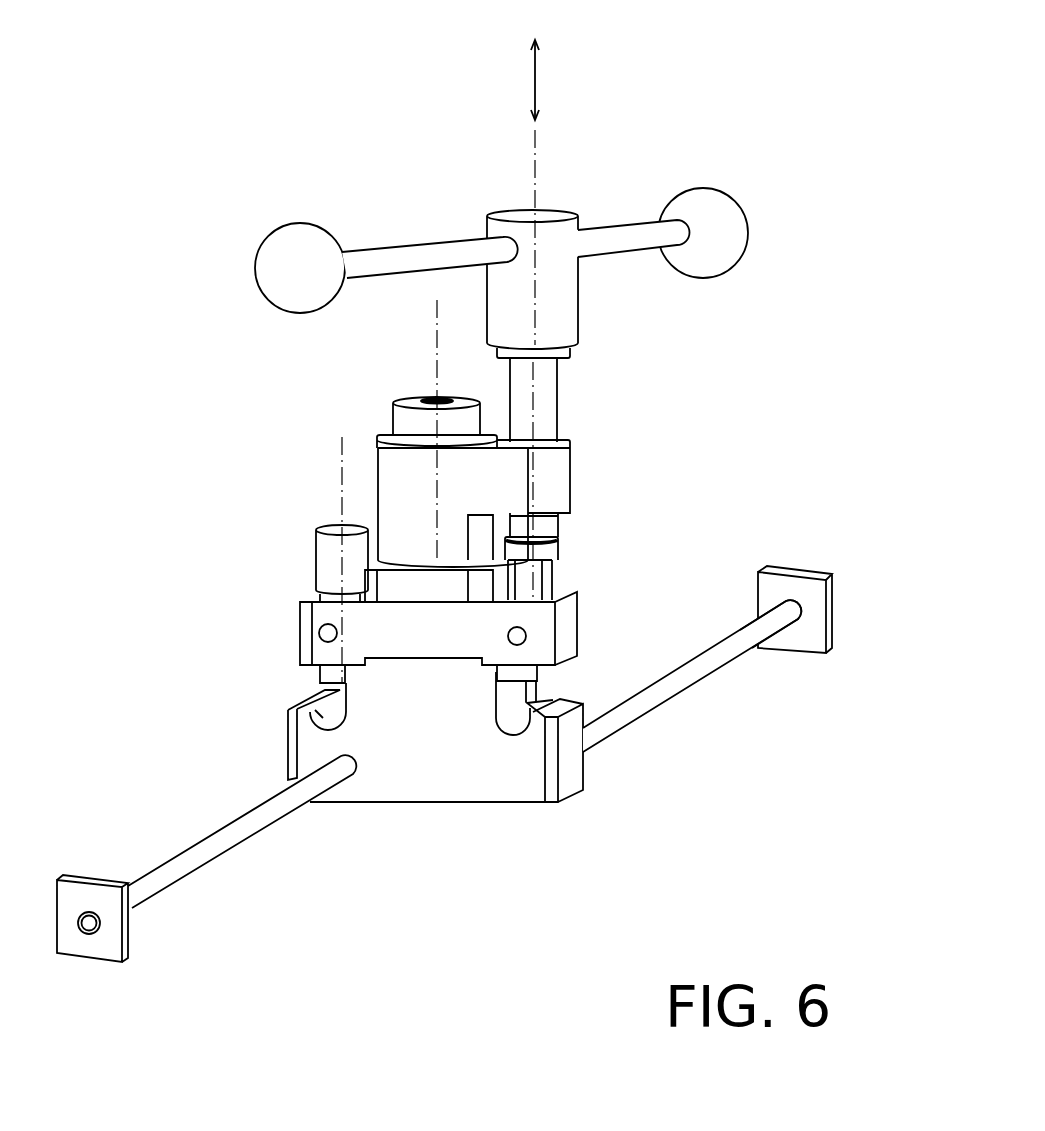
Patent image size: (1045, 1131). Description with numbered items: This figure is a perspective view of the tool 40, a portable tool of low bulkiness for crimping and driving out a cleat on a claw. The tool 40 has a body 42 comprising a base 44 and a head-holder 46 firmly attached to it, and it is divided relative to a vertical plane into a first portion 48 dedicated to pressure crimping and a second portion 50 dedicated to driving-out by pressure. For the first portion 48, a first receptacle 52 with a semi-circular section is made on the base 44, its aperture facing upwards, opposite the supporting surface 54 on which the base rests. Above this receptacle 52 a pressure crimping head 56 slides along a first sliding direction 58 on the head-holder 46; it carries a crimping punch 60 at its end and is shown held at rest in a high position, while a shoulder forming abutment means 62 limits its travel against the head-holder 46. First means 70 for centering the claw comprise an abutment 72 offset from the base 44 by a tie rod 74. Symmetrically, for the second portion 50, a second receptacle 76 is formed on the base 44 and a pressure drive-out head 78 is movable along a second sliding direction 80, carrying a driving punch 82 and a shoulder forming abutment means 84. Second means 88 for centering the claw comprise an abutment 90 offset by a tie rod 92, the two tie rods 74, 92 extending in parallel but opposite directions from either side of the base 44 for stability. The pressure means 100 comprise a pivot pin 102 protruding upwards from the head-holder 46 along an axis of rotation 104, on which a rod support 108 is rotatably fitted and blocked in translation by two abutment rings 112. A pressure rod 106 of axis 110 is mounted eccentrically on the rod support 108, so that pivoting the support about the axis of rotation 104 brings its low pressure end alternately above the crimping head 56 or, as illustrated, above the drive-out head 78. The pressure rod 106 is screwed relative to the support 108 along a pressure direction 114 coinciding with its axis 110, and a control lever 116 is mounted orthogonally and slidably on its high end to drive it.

The tool 40 is at (338, 90).
The body 42 is at (445, 783).
The base 44 is at (373, 778).
The head-holder 46 is at (478, 622).
The first portion 48 is at (268, 627).
The second portion 50 is at (583, 647).
The first receptacle 52 is at (312, 703).
The supporting surface 54 is at (507, 807).
The pressure crimping head 56 is at (313, 550).
The first sliding direction 58 is at (340, 450).
The crimping punch 60 is at (323, 683).
The abutment means 62 is at (297, 617).
The first means for centering the claw 70 is at (140, 867).
The abutment 72 is at (70, 892).
The tie rod 74 is at (237, 830).
The second receptacle 76 is at (558, 800).
The pressure drive-out head 78 is at (563, 548).
The second sliding direction 80 is at (557, 528).
The driving punch 82 is at (527, 684).
The abutment means 84 is at (512, 563).
The second means for centering the claw 88 is at (692, 698).
The abutment 90 is at (813, 600).
The tie rod 92 is at (753, 643).
The pressure means 100 is at (585, 392).
The pivot pin 102 is at (422, 420).
The axis of rotation 104 is at (440, 363).
The pressure rod 106 is at (547, 418).
The rod support 108 is at (398, 492).
The axis 110 is at (536, 150).
The abutment rings 112 is at (390, 433).
The pressure direction 114 is at (537, 77).
The control lever 116 is at (388, 265).